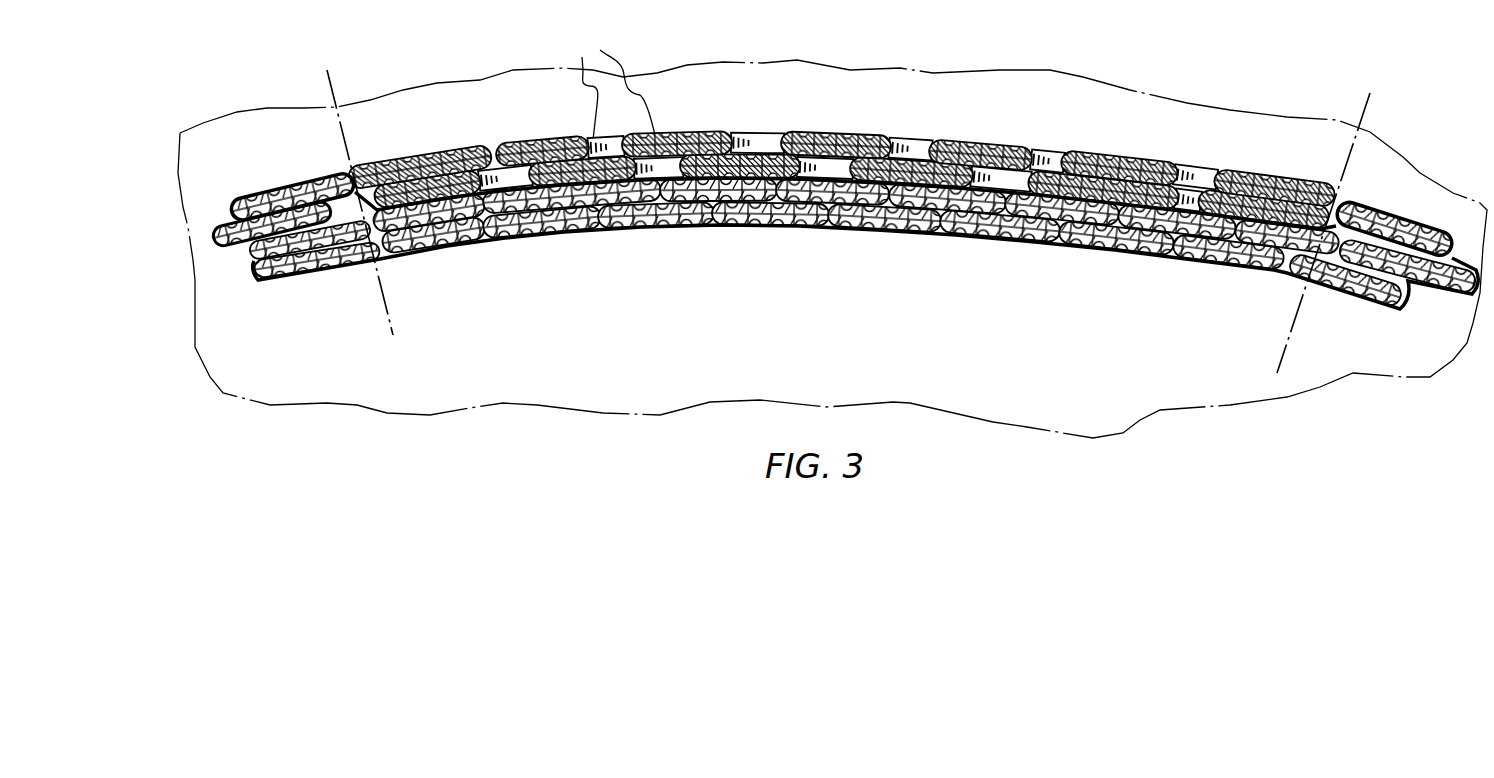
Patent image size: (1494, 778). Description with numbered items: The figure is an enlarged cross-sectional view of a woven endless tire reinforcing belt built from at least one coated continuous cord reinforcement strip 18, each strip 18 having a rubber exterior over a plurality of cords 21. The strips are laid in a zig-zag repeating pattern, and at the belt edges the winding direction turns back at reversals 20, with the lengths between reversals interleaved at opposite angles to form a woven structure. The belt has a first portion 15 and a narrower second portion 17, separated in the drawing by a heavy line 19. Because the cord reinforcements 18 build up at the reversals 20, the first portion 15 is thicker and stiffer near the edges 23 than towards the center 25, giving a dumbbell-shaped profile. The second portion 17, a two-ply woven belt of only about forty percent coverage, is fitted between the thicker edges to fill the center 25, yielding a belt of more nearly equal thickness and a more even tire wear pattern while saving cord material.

The first portion 15 is at (842, 232).
The second portion 17 is at (823, 138).
The coated continuous cord reinforcement strip 18 is at (547, 100).
The heavy line 19 is at (314, 168).
The reversals 20 is at (262, 194).
The cords 21 is at (580, 143).
The edges 23 is at (193, 292).
The center 25 is at (712, 103).